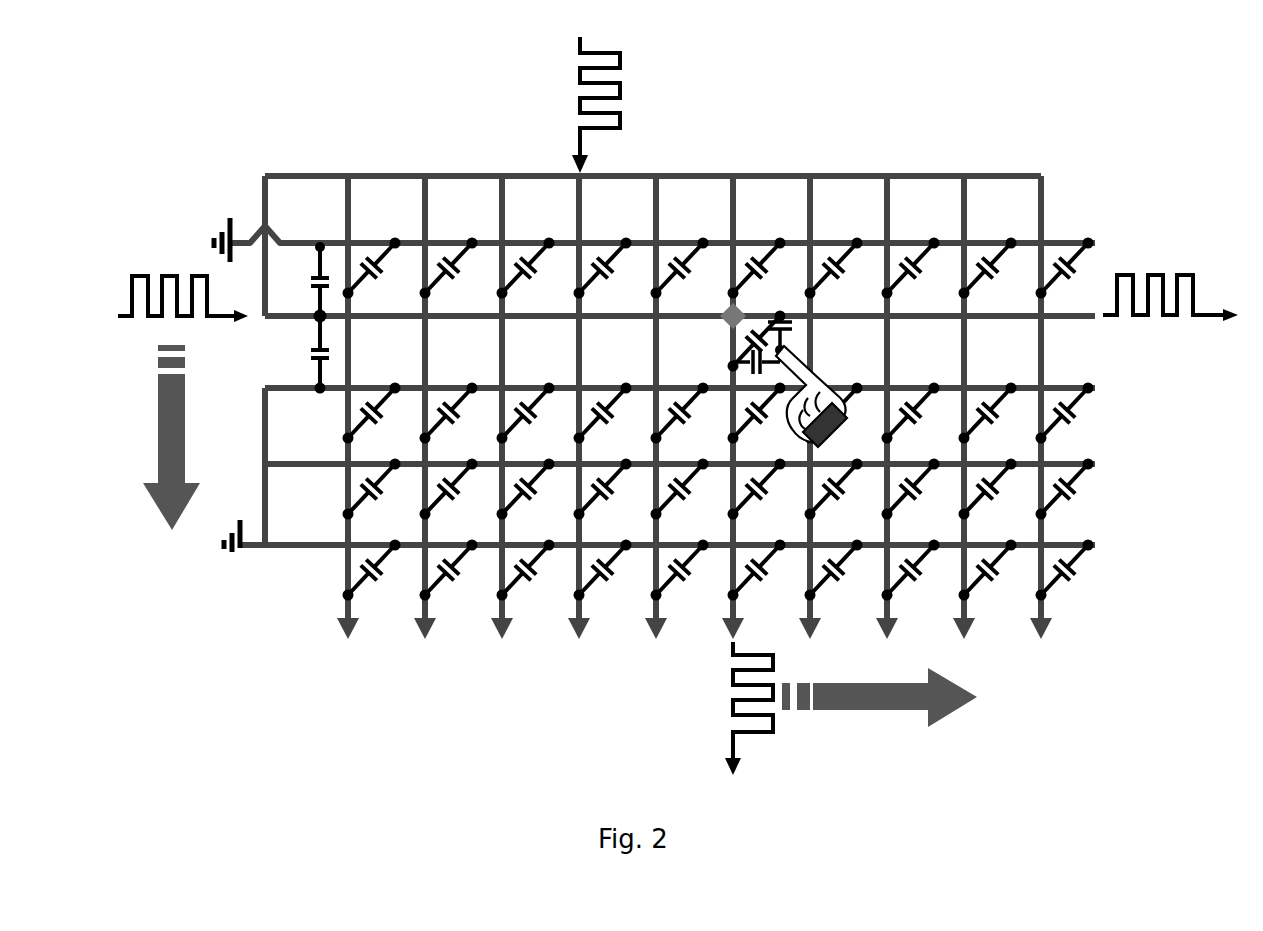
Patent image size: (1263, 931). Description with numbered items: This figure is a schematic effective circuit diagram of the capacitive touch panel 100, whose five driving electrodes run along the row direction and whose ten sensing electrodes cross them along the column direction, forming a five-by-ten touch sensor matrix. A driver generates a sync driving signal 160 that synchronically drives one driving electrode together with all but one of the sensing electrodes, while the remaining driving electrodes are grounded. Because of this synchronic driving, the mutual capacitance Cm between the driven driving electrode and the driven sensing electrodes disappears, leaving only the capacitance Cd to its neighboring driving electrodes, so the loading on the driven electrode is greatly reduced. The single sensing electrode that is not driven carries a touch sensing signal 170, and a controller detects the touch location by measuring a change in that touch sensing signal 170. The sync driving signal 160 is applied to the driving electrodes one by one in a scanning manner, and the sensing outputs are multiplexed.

The capacitive touch panel 100 is at (998, 131).
The sync driving signal 160 is at (200, 275).
The touch sensing signal 170 is at (732, 700).